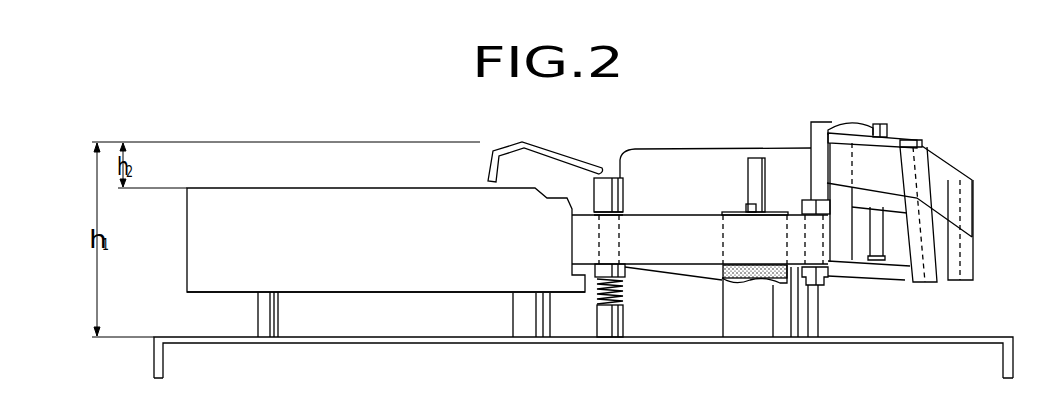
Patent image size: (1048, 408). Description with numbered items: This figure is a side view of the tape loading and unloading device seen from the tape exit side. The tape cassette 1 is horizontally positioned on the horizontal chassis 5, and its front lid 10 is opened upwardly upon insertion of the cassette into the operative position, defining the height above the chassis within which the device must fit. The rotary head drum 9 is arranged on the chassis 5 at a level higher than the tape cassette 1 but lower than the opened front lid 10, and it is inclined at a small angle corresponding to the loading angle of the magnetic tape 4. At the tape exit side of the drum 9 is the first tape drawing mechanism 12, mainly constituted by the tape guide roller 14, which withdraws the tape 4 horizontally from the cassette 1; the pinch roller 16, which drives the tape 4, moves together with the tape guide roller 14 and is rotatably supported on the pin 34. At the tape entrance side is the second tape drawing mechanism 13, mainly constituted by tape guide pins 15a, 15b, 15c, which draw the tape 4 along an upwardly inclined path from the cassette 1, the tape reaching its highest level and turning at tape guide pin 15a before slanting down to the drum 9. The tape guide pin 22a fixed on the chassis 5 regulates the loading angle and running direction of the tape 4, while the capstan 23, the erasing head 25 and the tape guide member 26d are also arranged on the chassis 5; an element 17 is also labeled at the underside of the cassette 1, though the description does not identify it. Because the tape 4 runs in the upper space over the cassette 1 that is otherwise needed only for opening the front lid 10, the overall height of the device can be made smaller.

The tape cassette 1 is at (444, 278).
The magnetic tape 4 is at (653, 256).
The chassis 5 is at (382, 340).
The rotary head drum 9 is at (695, 160).
The front lid 10 is at (555, 158).
The first tape drawing mechanism 12 is at (827, 296).
The second tape drawing mechanism 13 is at (957, 166).
The tape guide roller 14 is at (830, 269).
The tape guide pin 15a is at (830, 122).
The tape guide pin 15b is at (918, 144).
The tape guide pin 15c is at (968, 267).
The pinch roller 16 is at (723, 270).
The bottom plate 17 is at (369, 294).
The tape guide pin 22a is at (882, 126).
The capstan 23 is at (753, 165).
The erasing head 25 is at (862, 122).
The tape guide member 26d is at (608, 178).
The pin 34 is at (748, 206).